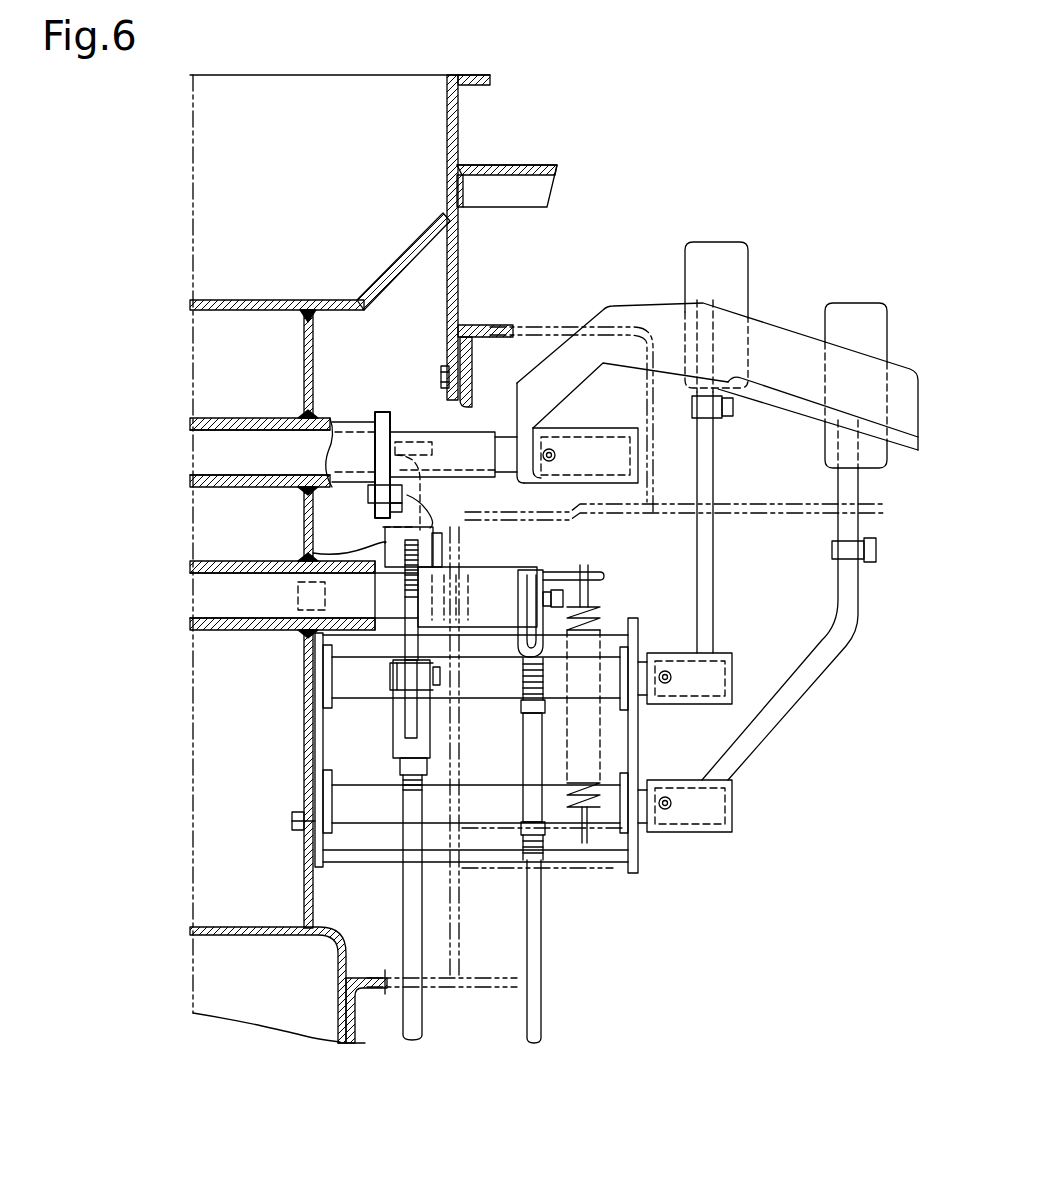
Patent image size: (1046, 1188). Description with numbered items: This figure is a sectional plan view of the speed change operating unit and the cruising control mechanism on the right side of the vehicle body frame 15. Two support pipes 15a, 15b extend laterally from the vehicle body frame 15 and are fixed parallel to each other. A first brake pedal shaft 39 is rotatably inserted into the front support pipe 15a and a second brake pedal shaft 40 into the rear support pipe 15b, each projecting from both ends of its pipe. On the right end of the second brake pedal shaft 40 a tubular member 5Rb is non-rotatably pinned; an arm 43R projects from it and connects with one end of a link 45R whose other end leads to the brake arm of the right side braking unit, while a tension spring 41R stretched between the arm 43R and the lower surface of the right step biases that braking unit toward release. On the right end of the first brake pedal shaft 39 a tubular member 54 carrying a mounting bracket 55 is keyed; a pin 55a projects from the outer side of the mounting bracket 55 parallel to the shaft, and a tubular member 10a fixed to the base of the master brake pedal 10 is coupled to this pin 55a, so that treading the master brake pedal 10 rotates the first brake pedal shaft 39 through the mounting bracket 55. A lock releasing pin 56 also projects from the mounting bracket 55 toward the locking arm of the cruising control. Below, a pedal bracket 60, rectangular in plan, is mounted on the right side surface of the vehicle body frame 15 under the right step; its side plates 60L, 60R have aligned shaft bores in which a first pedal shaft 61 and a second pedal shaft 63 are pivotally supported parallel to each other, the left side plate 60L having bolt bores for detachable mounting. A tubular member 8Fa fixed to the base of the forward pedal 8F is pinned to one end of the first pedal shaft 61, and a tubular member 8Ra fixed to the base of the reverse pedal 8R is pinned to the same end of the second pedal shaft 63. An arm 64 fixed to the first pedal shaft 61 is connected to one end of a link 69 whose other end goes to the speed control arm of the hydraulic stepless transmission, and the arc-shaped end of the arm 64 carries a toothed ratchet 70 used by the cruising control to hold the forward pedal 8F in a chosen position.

The tubular member 5Rb is at (490, 572).
The forward pedal 8F is at (705, 242).
The tubular member 8Fa is at (728, 653).
The reverse pedal 8R is at (847, 303).
The tubular member 8Ra is at (712, 832).
The master brake pedal 10 is at (785, 330).
The tubular member 10a is at (605, 430).
The vehicle body frame 15 is at (314, 378).
The front support pipe 15a is at (238, 417).
The rear support pipe 15b is at (210, 633).
The first brake pedal shaft 39 is at (242, 472).
The second brake pedal shaft 40 is at (242, 612).
The tension spring 41R is at (600, 598).
The arm 43R is at (530, 580).
The link 45R is at (538, 960).
The tubular member 54 is at (350, 425).
The mounting bracket 55 is at (384, 412).
The pin 55a is at (504, 432).
The lock releasing pin 56 is at (312, 522).
The pedal bracket 60 is at (618, 870).
The left side plate 60L is at (322, 870).
The right side plate 60R is at (636, 862).
The first pedal shaft 61 is at (502, 690).
The second pedal shaft 63 is at (470, 792).
The arm 64 is at (392, 682).
The link 69 is at (420, 1009).
The ratchet 70 is at (313, 548).